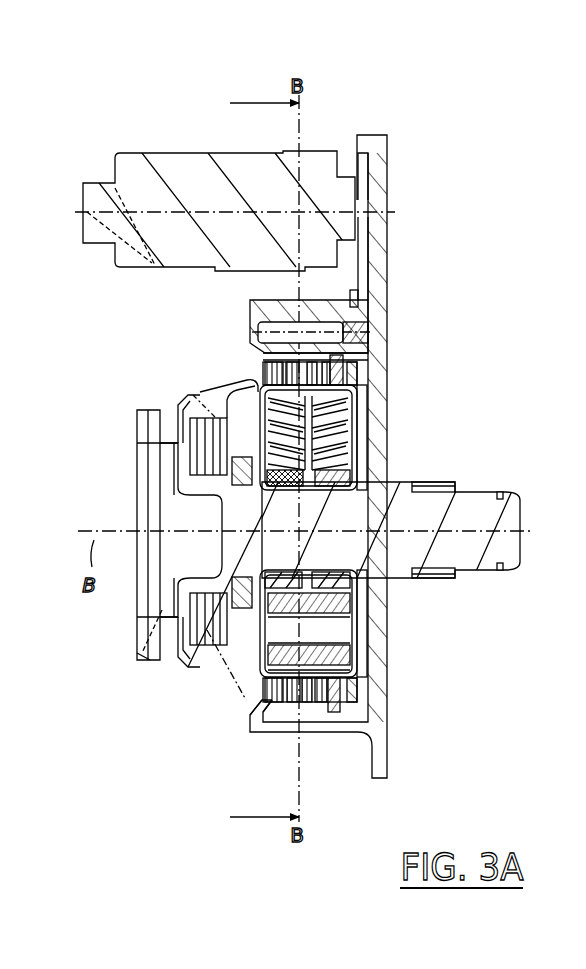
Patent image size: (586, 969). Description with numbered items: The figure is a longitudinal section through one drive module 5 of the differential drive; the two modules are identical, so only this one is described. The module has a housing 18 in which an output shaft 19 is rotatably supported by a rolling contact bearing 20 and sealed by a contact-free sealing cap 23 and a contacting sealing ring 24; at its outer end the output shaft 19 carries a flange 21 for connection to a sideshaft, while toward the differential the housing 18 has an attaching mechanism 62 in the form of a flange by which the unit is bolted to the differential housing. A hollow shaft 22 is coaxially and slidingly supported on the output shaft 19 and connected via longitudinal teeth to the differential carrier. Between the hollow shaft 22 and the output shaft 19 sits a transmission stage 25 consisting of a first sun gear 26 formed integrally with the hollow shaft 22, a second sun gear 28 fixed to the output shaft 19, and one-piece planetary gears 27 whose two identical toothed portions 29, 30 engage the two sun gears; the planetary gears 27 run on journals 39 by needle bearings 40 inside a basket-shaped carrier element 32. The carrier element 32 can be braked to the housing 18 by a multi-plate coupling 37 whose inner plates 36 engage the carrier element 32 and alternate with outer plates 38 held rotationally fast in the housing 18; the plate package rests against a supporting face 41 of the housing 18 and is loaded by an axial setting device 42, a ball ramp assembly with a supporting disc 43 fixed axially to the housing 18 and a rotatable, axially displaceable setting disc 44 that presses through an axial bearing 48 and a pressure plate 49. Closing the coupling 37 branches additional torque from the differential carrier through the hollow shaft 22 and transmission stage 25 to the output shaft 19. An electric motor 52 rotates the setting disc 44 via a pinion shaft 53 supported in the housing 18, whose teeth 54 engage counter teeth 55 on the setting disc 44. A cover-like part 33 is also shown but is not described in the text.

The drive module 5 is at (436, 130).
The housing 18 is at (213, 400).
The output shaft 19 is at (507, 520).
The rolling contact bearing 20 is at (188, 667).
The flange 21 is at (158, 655).
The hollow shaft 22 is at (418, 482).
The sealing cap 23 is at (165, 410).
The sealing ring 24 is at (197, 457).
The transmission stage 25 is at (366, 622).
The first sun gear 26 is at (298, 572).
The planetary gears 27 is at (330, 452).
The second sun gear 28 is at (276, 572).
The toothed portion 29 is at (320, 472).
The toothed portion 30 is at (246, 405).
The carrier element 32 is at (356, 422).
The cover plate 33 is at (262, 372).
The inner plates 36 is at (273, 703).
The coupling 37 is at (244, 697).
The outer plates 38 is at (292, 703).
The journals 39 is at (352, 636).
The needle bearings 40 is at (350, 600).
The supporting face 41 is at (240, 457).
The axial setting device 42 is at (348, 722).
The supporting disc 43 is at (347, 380).
The setting disc 44 is at (340, 366).
The axial bearing 48 is at (330, 712).
The pressure plate 49 is at (306, 703).
The electric motor 52 is at (182, 162).
The pinion shaft 53 is at (372, 307).
The teeth 54 is at (368, 292).
The counter teeth 55 is at (347, 340).
The attaching mechanism 62 is at (388, 762).